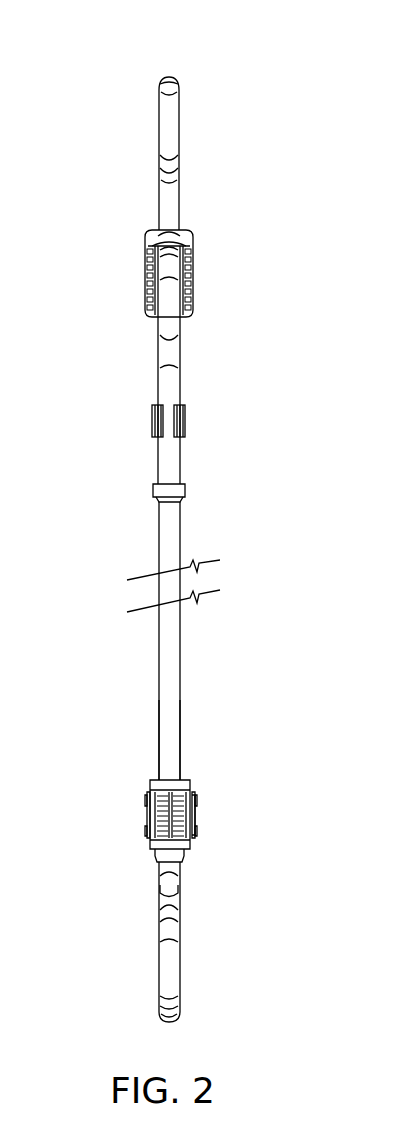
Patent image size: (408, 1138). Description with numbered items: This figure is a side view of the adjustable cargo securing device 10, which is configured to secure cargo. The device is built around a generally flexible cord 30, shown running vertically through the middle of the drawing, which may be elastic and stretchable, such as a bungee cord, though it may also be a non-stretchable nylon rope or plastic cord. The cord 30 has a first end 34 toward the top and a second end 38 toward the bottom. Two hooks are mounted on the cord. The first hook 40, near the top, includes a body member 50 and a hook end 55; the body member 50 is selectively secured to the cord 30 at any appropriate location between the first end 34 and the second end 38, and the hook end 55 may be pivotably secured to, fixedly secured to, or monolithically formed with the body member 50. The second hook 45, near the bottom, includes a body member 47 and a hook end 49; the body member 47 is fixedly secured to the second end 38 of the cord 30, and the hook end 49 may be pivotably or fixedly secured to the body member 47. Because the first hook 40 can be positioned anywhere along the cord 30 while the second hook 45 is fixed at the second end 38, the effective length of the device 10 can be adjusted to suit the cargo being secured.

The adjustable cargo securing device 10 is at (100, 376).
The cord 30 is at (163, 530).
The first end 34 is at (168, 458).
The second end 38 is at (170, 760).
The first hook 40 is at (178, 208).
The second hook 45 is at (160, 818).
The body member 47 is at (197, 813).
The hook end 49 is at (165, 952).
The body member 50 is at (195, 278).
The hook end 55 is at (168, 77).